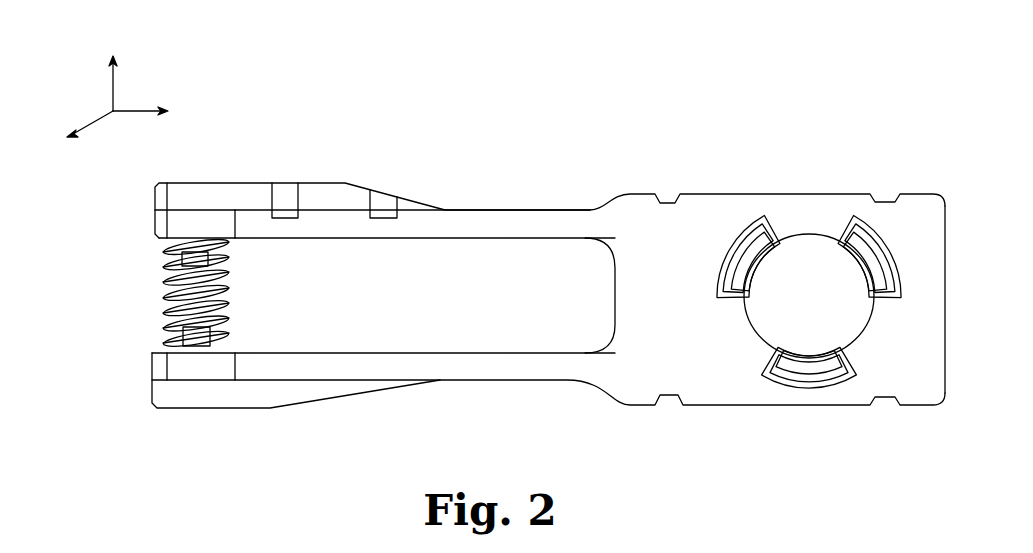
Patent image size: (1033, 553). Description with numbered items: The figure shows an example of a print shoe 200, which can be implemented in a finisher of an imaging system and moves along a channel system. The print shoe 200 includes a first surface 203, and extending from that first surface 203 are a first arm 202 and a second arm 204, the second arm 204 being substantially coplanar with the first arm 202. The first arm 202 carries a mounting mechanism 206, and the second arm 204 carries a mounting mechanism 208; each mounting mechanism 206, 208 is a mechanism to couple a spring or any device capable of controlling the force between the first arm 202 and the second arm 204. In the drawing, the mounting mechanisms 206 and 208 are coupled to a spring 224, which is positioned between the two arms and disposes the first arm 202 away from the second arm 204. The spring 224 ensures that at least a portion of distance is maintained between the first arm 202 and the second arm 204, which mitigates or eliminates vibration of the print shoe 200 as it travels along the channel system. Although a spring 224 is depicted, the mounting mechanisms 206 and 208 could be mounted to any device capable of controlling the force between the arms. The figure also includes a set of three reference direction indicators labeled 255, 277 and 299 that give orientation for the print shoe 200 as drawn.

The print shoe 200 is at (471, 181).
The first arm 202 is at (532, 210).
The first surface 203 is at (613, 292).
The second arm 204 is at (437, 382).
The mounting mechanism 206 is at (180, 258).
The mounting mechanism 208 is at (178, 335).
The spring 224 is at (167, 298).
The axis 255 is at (73, 127).
The axis 277 is at (156, 110).
The axis 299 is at (113, 71).